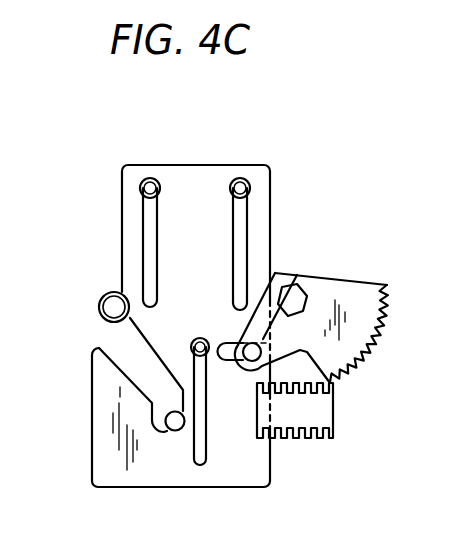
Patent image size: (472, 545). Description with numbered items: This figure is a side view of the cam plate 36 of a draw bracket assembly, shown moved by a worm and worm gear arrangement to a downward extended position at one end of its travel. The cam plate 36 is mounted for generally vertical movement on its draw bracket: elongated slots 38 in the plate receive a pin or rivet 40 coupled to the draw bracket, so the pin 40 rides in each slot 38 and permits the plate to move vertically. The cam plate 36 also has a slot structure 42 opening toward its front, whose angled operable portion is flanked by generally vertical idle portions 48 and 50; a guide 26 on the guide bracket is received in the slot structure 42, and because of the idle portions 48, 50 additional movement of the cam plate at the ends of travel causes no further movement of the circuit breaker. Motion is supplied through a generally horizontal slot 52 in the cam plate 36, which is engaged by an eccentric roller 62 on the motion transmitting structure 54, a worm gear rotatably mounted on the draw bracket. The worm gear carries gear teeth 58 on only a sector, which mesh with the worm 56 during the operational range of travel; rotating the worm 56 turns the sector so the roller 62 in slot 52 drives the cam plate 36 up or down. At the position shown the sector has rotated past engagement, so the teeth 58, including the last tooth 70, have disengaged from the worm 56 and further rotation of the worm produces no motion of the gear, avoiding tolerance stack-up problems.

The guide 26 is at (102, 302).
The cam plate 36 is at (200, 180).
The elongated slot 38 is at (153, 213).
The pin or rivet 40 is at (149, 186).
The slot structure 42 is at (121, 360).
The idle portion 48 is at (130, 315).
The idle portion 50 is at (172, 412).
The horizontal slot 52 is at (223, 342).
The motion transmitting structure 54 is at (340, 275).
The worm 56 is at (335, 415).
The gear teeth 58 is at (387, 335).
The eccentric roller 62 is at (268, 290).
The last tooth 70 is at (338, 394).